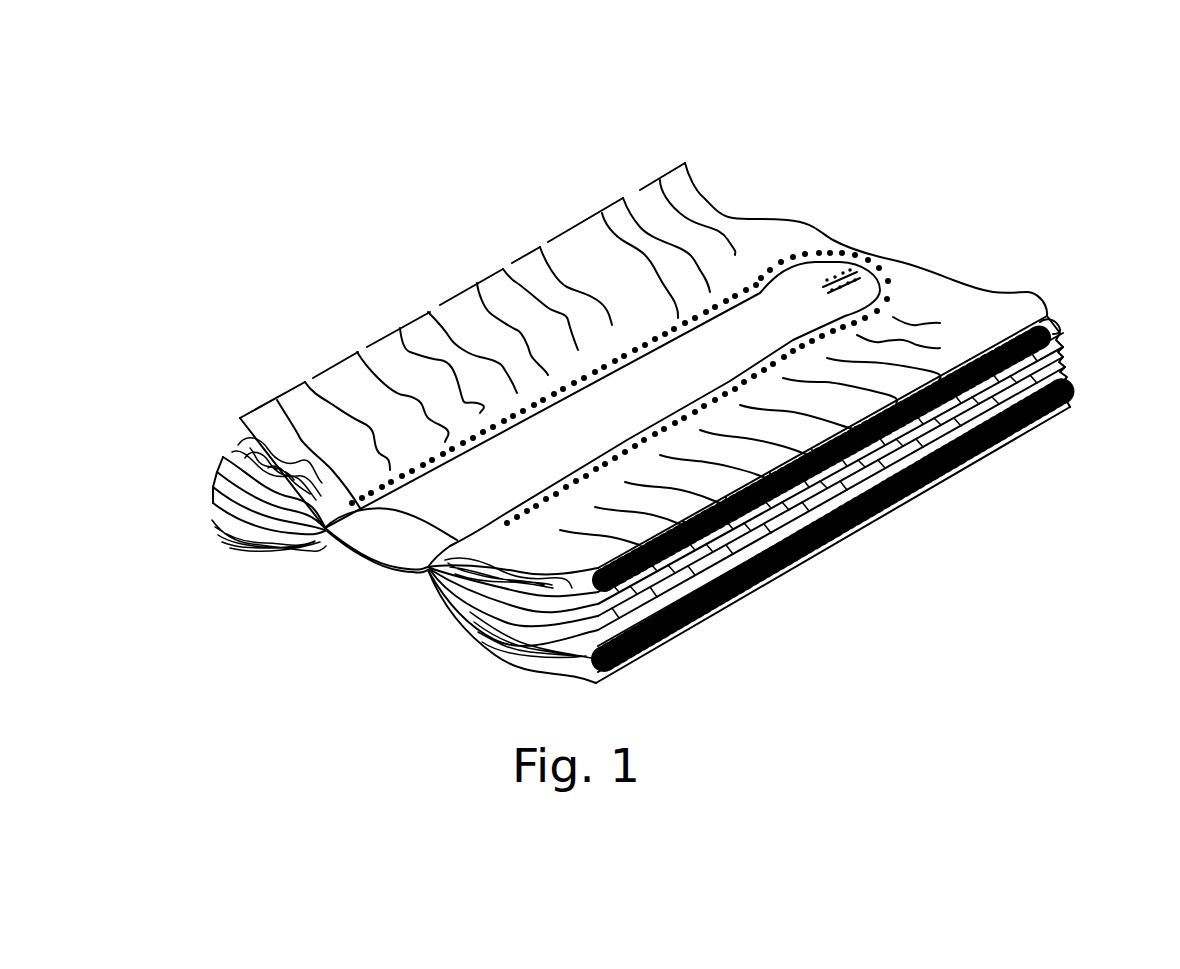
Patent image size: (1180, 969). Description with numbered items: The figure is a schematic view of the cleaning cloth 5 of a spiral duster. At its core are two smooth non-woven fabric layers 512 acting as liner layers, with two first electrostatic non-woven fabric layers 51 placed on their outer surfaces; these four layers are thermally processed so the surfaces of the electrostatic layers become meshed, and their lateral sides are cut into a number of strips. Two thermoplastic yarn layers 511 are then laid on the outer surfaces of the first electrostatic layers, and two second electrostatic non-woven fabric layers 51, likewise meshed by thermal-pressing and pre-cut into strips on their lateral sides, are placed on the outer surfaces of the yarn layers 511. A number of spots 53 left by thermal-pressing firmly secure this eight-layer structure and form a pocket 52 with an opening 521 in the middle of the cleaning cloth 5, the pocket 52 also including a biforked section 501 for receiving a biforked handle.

The cleaning cloth 5 is at (240, 183).
The electrostatic non-woven fabric layer 51 is at (223, 455).
The yarn layer 511 is at (1058, 332).
The smooth non-woven fabric layer 512 is at (223, 468).
The pocket 52 is at (590, 410).
The opening 521 is at (377, 550).
The spots 53 is at (795, 248).
The biforked section 501 is at (858, 272).